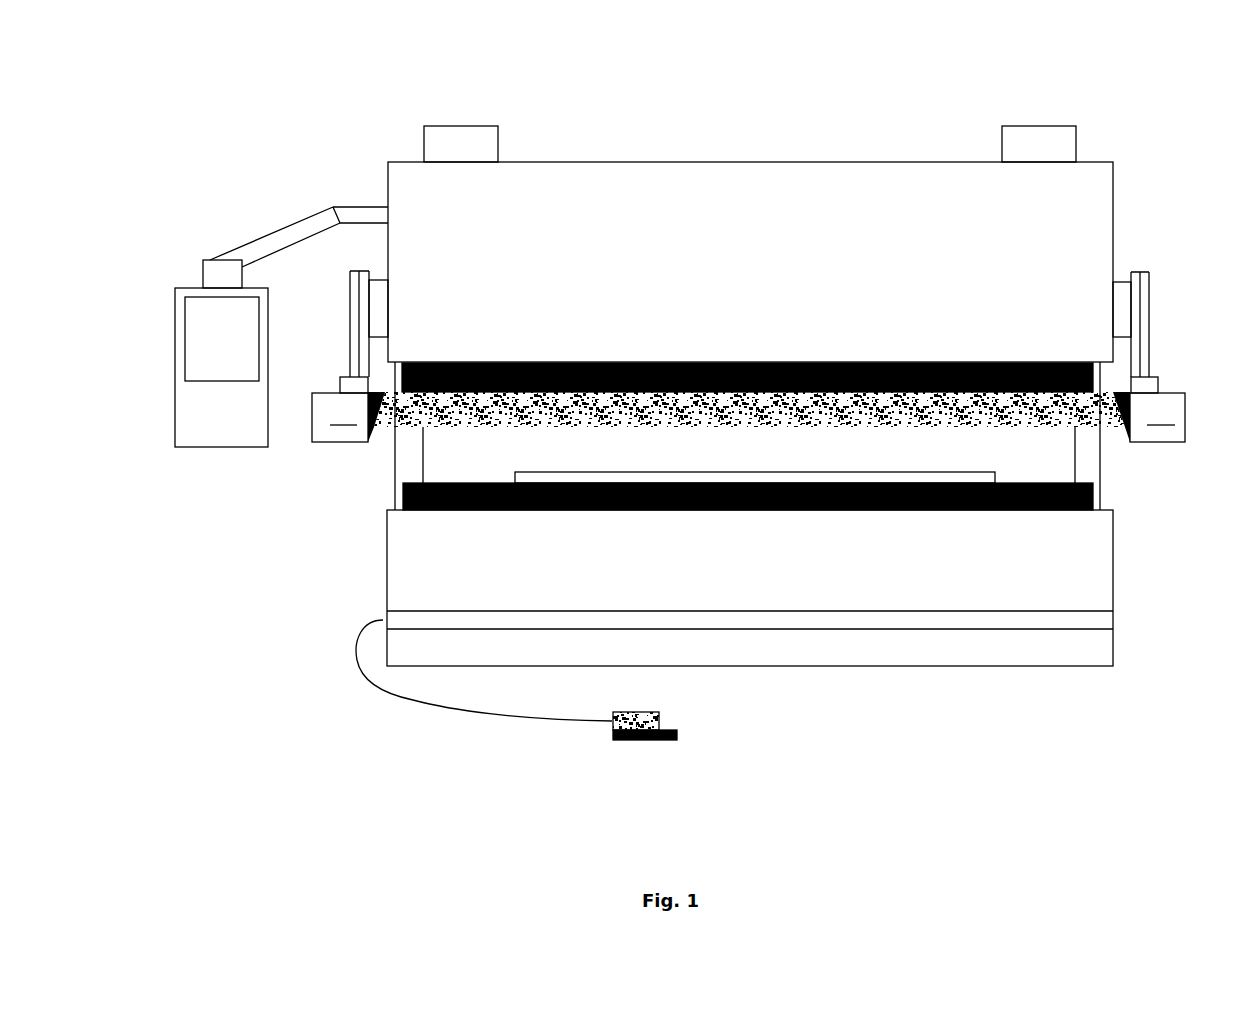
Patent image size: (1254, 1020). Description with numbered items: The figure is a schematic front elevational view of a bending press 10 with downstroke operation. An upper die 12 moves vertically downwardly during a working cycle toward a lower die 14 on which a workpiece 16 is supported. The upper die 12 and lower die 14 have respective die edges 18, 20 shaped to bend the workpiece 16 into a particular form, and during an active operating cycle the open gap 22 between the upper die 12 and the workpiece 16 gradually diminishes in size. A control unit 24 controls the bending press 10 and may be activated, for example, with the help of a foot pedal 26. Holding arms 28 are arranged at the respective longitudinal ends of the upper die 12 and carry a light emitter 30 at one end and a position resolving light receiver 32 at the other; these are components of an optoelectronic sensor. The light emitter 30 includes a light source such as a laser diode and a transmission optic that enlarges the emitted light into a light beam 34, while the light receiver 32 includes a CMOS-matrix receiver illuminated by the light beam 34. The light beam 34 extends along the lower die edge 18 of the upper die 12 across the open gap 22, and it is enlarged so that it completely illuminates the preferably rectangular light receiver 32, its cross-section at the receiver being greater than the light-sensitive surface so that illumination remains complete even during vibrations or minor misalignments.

The bending press 10 is at (353, 147).
The upper die 12 is at (580, 190).
The lower die 14 is at (942, 580).
The workpiece 16 is at (630, 473).
The die edge 18 is at (743, 363).
The die edge 20 is at (808, 512).
The open gap 22 is at (1058, 453).
The control unit 24 is at (197, 326).
The foot pedal 26 is at (660, 718).
The holding arm 28 is at (353, 348).
The light emitter 30 is at (322, 420).
The light receiver 32 is at (1173, 410).
The light beam 34 is at (437, 425).